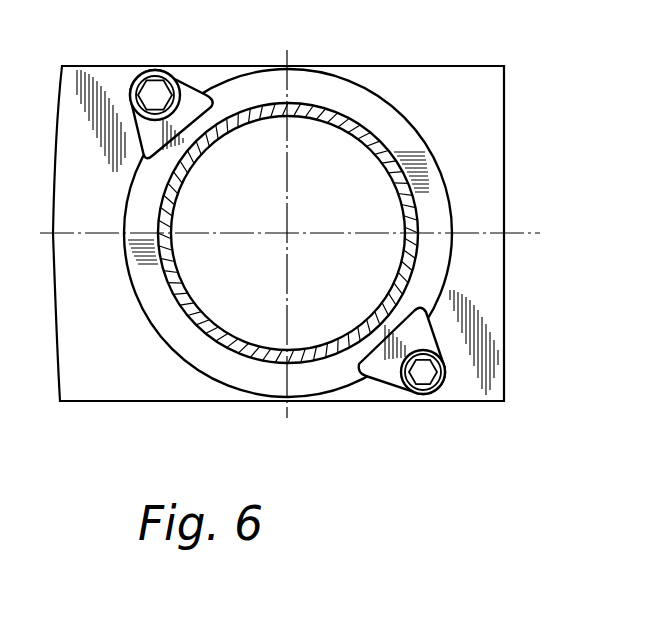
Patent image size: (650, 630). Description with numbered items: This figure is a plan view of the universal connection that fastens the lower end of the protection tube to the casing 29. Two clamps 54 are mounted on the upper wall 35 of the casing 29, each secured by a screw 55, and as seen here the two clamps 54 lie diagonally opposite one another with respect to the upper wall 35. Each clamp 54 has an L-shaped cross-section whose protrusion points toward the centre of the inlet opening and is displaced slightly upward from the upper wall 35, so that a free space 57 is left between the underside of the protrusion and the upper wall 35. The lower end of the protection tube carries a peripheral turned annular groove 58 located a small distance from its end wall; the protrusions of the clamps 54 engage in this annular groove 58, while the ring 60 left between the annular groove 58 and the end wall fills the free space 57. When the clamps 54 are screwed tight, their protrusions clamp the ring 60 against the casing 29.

The casing 29 is at (486, 183).
The upper wall 35 is at (88, 361).
The clamp 54 is at (190, 103).
The screw 55 is at (423, 378).
The free space 57 is at (356, 108).
The annular groove 58 is at (392, 149).
The ring 60 is at (176, 316).